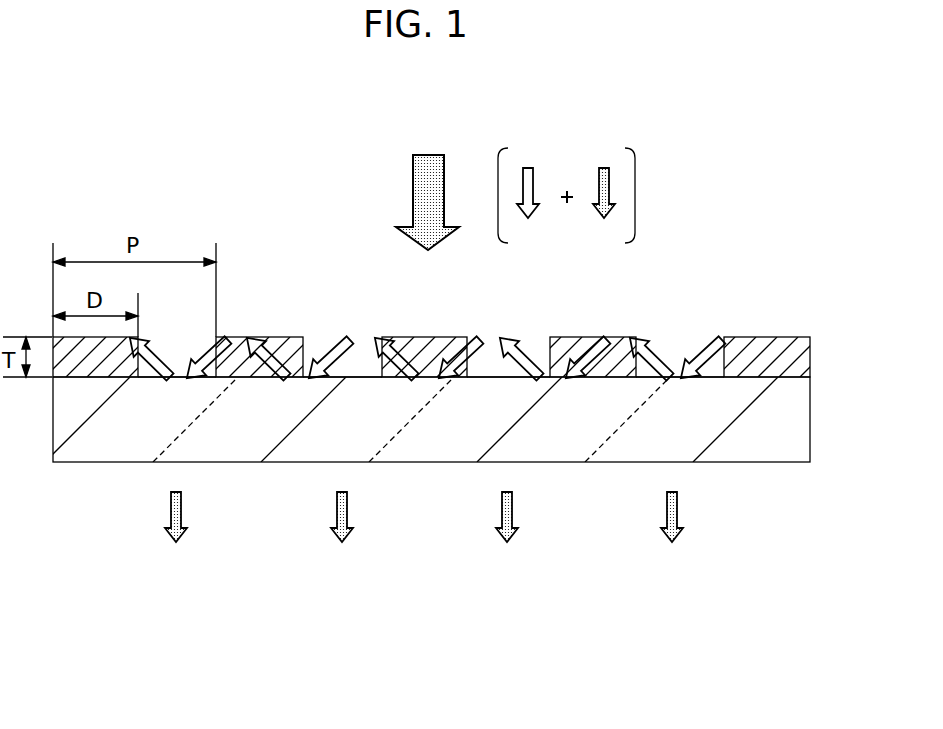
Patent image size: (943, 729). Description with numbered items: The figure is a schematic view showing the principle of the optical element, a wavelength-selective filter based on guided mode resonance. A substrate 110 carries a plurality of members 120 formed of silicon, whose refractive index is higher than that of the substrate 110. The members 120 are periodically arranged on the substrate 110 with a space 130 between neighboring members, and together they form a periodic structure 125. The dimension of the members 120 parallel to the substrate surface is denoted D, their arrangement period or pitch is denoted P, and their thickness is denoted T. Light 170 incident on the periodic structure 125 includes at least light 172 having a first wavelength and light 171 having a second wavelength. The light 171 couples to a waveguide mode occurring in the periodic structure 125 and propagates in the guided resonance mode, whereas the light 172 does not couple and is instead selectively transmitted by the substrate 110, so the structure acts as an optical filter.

The substrate 110 is at (770, 453).
The members 120 is at (615, 340).
The periodic structure 125 is at (443, 321).
The space 130 is at (542, 348).
The incident light 170 is at (413, 169).
The light having second wavelength 171 is at (528, 168).
The light having first wavelength 172 is at (604, 168).